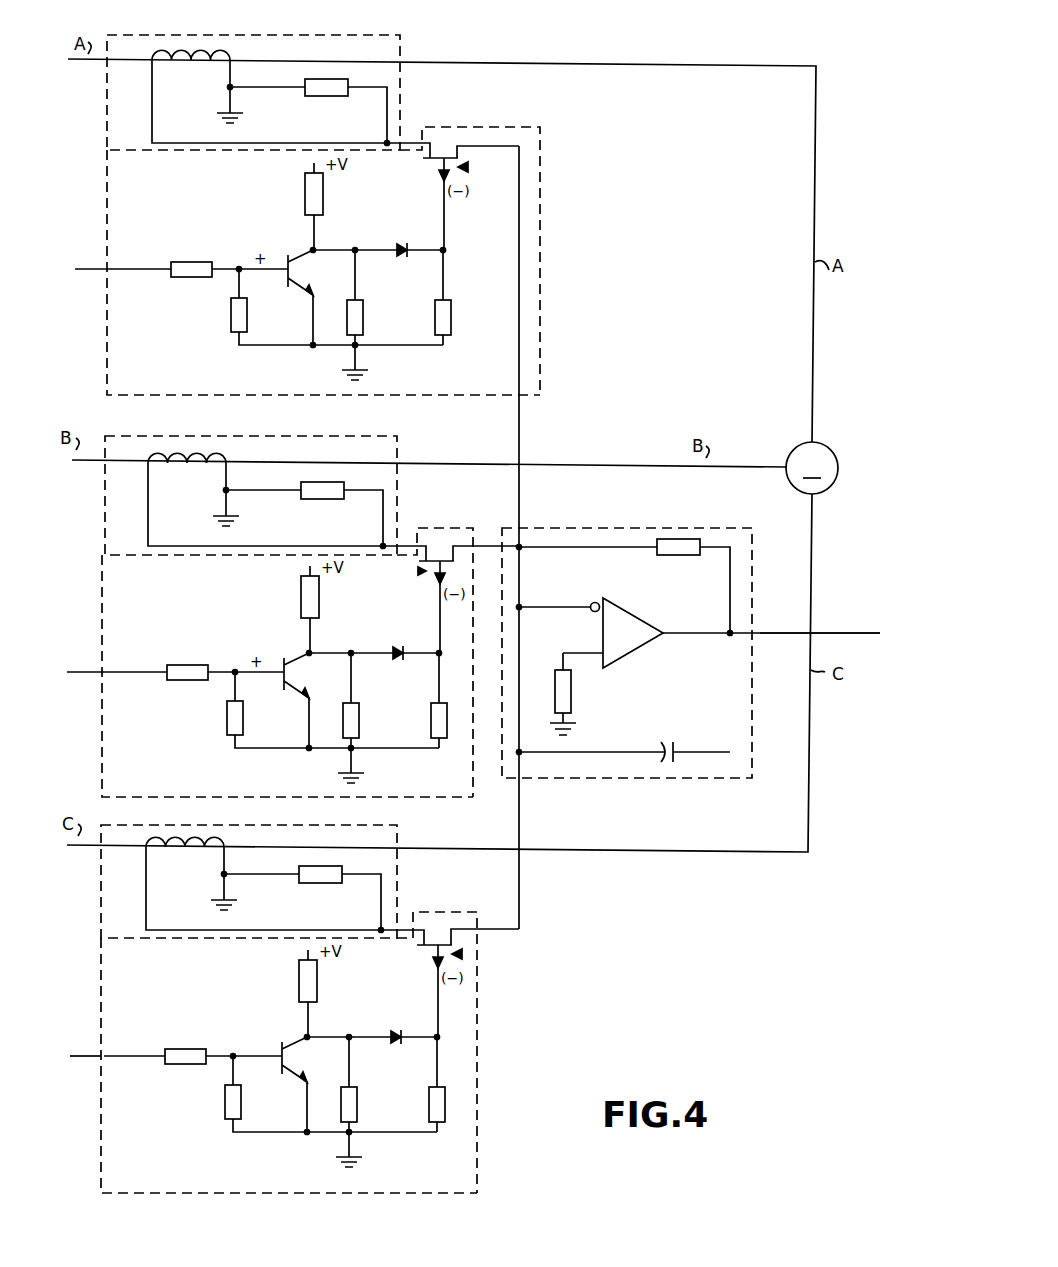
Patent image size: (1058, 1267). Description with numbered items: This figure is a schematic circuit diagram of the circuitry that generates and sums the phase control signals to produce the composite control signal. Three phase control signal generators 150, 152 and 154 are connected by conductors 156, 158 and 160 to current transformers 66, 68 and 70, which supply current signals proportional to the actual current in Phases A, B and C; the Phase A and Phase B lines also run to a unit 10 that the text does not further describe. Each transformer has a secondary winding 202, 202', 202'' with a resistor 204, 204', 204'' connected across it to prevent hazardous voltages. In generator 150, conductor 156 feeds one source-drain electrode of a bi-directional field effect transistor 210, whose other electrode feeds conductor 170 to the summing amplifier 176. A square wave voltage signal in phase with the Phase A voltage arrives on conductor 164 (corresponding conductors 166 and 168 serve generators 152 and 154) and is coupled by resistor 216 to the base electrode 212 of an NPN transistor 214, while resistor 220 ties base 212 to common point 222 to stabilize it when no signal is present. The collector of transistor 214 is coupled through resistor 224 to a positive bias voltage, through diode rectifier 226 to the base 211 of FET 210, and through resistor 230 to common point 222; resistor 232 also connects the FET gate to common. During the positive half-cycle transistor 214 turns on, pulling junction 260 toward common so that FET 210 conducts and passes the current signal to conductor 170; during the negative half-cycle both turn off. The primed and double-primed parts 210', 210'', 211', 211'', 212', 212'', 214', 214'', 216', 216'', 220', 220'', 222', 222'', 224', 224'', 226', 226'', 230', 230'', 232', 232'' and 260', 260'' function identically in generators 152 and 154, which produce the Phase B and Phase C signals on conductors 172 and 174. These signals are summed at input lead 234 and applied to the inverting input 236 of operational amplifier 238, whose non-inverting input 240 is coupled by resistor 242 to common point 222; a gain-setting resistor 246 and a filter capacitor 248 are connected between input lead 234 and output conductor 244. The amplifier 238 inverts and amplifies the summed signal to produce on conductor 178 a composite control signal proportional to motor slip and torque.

The light source unit 10 is at (812, 468).
The current transformer 66 is at (304, 40).
The current transformer 68 is at (106, 496).
The current transformer 70 is at (102, 884).
The phase control signal generator 150 is at (106, 192).
The phase control signal generator 152 is at (104, 600).
The phase control signal generator 154 is at (102, 998).
The conductor 156 is at (412, 130).
The conductor 158 is at (412, 533).
The conductor 160 is at (410, 916).
The conductor 164 is at (75, 269).
The input terminal 166 is at (69, 673).
The input terminal 168 is at (64, 1058).
The conductor 170 is at (521, 492).
The conductor 172 is at (474, 542).
The conductor 174 is at (521, 914).
The summing amplifier 176 is at (606, 526).
The conductor 178 is at (838, 620).
The secondary winding 202 is at (197, 86).
The secondary winding 202' is at (193, 489).
The secondary winding 202'' is at (191, 873).
The resistor 204 is at (310, 112).
The resistor 204' is at (306, 515).
The resistor 204'' is at (304, 899).
The field effect transistor 210 is at (485, 167).
The field effect transistor 210' is at (401, 571).
The field effect transistor 210'' is at (490, 954).
The base of FET 211 is at (416, 204).
The base of FET 211' is at (418, 607).
The base of FET 211'' is at (417, 991).
The base electrode 212 is at (276, 297).
The base electrode 212' is at (272, 700).
The base electrode 212'' is at (270, 1084).
The NPN type transistor 214 is at (269, 236).
The NPN type transistor 214' is at (267, 639).
The NPN type transistor 214'' is at (277, 1023).
The resistor 216 is at (176, 254).
The resistor 216' is at (172, 657).
The resistor 216'' is at (170, 1041).
The resistor 220 is at (246, 308).
The resistor 220' is at (242, 711).
The resistor 220'' is at (239, 1095).
The ground or common point 222 is at (380, 362).
The ground or common point 222' is at (378, 765).
The ground or common point 222'' is at (382, 1149).
The resistor 224 is at (333, 206).
The resistor 224' is at (332, 609).
The resistor 224'' is at (332, 993).
The diode rectifier 226 is at (399, 235).
The diode rectifier 226' is at (394, 638).
The diode rectifier 226'' is at (397, 1022).
The resistor 230 is at (375, 298).
The resistor 230' is at (374, 701).
The resistor 230'' is at (374, 1085).
The resistor 232 is at (403, 297).
The resistor 232' is at (378, 700).
The resistor 232'' is at (376, 1084).
The input lead 234 is at (540, 600).
The inverting input 236 is at (593, 598).
The operational amplifier 238 is at (645, 645).
The non-inverting input 240 is at (595, 653).
The resistor 242 is at (572, 690).
The output conductor 244 is at (708, 618).
The gain-setting resistor 246 is at (672, 556).
The filter capacitor 248 is at (676, 738).
The junction 260 is at (377, 235).
The junction 260' is at (373, 638).
The junction 260'' is at (371, 1022).